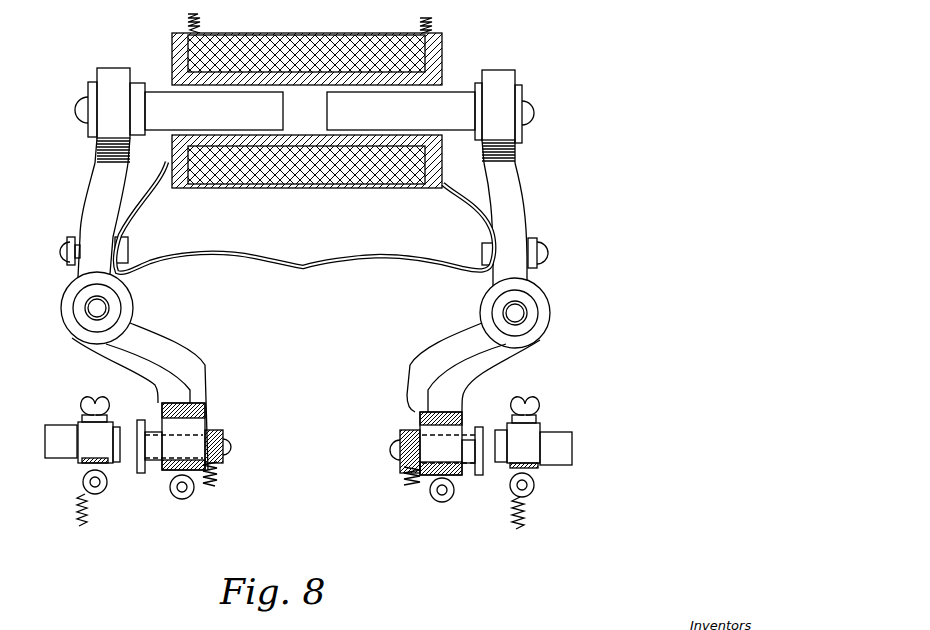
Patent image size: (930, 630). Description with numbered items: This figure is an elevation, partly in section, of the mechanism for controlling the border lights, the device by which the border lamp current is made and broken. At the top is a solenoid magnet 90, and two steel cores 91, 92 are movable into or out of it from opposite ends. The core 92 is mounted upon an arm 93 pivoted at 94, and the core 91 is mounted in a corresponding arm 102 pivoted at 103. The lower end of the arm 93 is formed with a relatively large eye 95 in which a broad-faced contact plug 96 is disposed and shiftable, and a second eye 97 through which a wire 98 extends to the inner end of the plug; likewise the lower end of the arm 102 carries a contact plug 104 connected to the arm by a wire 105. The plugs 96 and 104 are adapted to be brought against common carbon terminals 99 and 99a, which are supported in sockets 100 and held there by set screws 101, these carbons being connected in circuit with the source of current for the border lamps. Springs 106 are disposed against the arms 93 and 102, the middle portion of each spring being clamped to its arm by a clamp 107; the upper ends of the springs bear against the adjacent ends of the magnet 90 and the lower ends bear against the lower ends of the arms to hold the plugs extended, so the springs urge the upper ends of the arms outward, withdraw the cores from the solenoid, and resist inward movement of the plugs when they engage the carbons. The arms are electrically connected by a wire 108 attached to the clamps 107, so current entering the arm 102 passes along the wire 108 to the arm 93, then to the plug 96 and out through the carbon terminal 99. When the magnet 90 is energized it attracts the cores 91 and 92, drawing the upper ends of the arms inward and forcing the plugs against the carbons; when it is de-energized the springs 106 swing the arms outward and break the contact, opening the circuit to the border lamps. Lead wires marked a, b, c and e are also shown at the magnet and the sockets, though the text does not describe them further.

The solenoid magnet 90 is at (300, 29).
The steel core 91 is at (401, 111).
The steel core 92 is at (214, 111).
The arm 93 is at (82, 218).
The pivot 94 is at (97, 308).
The eye 95 is at (192, 432).
The contact plug 96 is at (155, 462).
The eye 97 is at (195, 490).
The wire 98 is at (215, 472).
The carbon terminal 99 is at (65, 452).
The carbon terminal 99a is at (560, 453).
The socket 100 is at (106, 488).
The set screw 101 is at (96, 400).
The arm 102 is at (520, 222).
The pivot 103 is at (515, 313).
The contact plug 104 is at (463, 437).
The wire 105 is at (412, 480).
The spring 106 is at (205, 348).
The clamp 107 is at (130, 250).
The wire 108 is at (313, 262).
The lead wire a is at (184, 17).
The lead wire b is at (83, 531).
The lead wire c is at (432, 25).
The lead wire e is at (527, 533).